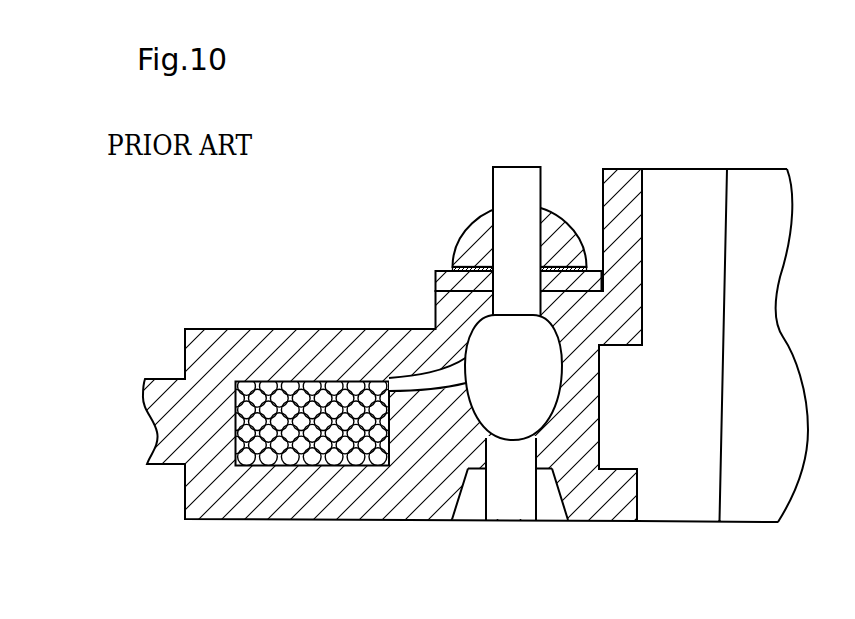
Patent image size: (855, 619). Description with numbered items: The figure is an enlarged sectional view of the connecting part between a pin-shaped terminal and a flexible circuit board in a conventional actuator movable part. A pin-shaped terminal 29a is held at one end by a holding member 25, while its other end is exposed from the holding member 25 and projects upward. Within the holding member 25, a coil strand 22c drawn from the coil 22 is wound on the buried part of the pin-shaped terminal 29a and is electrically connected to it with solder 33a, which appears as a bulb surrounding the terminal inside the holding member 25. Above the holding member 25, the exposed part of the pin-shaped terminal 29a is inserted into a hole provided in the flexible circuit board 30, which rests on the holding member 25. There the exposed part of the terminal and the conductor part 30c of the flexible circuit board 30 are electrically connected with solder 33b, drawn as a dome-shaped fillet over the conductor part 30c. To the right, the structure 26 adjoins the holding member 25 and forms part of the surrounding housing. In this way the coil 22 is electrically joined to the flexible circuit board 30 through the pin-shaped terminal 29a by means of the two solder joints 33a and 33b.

The coil 22 is at (335, 392).
The coil strand 22c is at (414, 392).
The holding member 25 is at (268, 345).
The connector housing 26 is at (668, 169).
The pin-shaped terminal 29a is at (513, 172).
The flexible circuit board 30 is at (438, 274).
The conductor part 30c is at (450, 268).
The solder 33a is at (532, 387).
The solder 33b is at (472, 228).